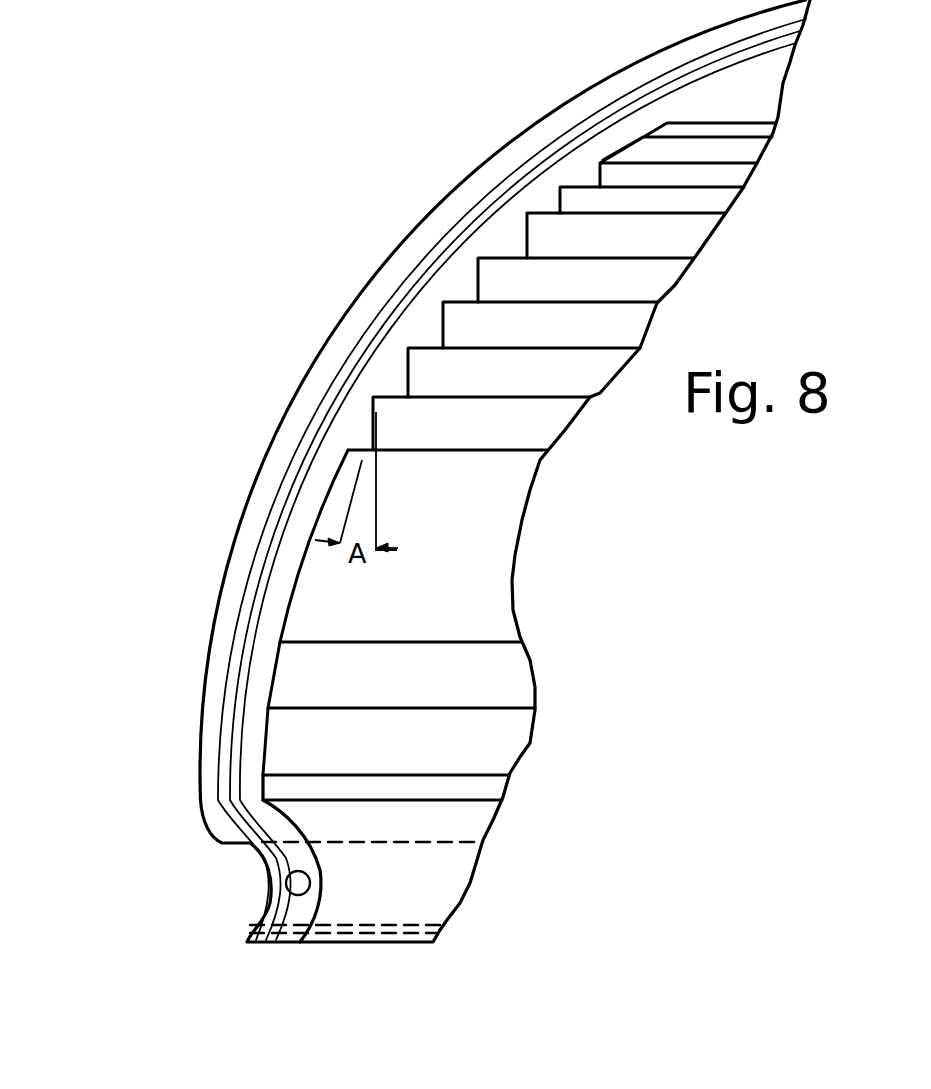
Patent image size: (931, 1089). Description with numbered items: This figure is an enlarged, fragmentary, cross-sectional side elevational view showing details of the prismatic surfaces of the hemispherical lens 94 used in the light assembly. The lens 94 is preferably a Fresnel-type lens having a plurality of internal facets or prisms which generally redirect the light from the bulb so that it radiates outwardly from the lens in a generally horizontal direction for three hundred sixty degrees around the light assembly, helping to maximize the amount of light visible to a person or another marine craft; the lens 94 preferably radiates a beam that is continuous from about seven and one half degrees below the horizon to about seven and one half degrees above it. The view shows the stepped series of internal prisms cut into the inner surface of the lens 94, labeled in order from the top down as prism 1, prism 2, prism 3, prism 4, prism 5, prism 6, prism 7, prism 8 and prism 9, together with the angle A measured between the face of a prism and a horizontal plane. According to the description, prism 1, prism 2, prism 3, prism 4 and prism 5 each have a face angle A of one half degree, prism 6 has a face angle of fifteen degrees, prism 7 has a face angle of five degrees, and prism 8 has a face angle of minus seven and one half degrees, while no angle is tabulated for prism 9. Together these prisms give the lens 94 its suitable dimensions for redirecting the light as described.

The prism 1 is at (597, 170).
The prism 2 is at (560, 200).
The prism 3 is at (527, 240).
The prism 4 is at (473, 280).
The prism 5 is at (440, 320).
The prism 6 is at (403, 367).
The prism 7 is at (365, 428).
The prism 8 is at (277, 675).
The prism 9 is at (270, 747).
The hemispherical lens 94 is at (358, 572).